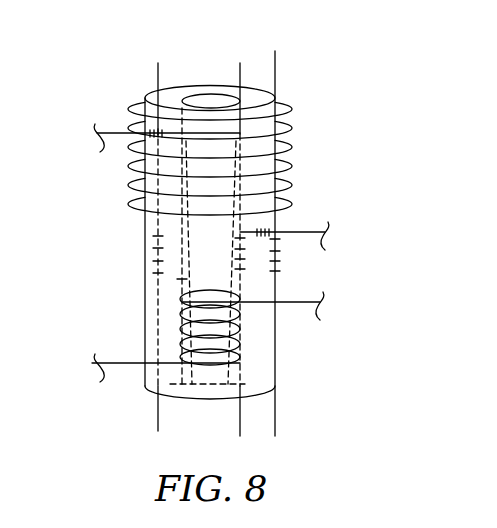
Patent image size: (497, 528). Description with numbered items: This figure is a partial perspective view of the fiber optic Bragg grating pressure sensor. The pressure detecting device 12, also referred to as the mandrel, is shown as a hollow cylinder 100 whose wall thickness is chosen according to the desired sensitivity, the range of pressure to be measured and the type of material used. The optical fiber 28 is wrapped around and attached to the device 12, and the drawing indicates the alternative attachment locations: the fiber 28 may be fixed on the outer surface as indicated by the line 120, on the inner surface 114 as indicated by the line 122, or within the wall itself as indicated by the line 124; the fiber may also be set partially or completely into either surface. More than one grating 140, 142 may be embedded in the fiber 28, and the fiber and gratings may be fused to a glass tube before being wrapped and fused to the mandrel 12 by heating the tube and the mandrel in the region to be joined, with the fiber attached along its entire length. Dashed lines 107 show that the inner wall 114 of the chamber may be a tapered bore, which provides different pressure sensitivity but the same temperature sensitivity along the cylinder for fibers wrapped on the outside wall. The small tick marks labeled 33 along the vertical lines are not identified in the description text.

The pressure detecting device 12 is at (143, 92).
The fiber 28 is at (205, 287).
The Bragg grating 33 is at (150, 257).
The hollow cylinder 100 is at (200, 88).
The dashed lines indicating tapered bore 107 is at (170, 282).
The inner surface 114 is at (151, 393).
The line indicating fiber attachment on outer surface 120 is at (276, 81).
The line indicating fiber attachment on inner surface 122 is at (240, 66).
The line indicating fiber attachment in the wall 124 is at (158, 66).
The grating 140 is at (143, 126).
The grating 142 is at (276, 227).